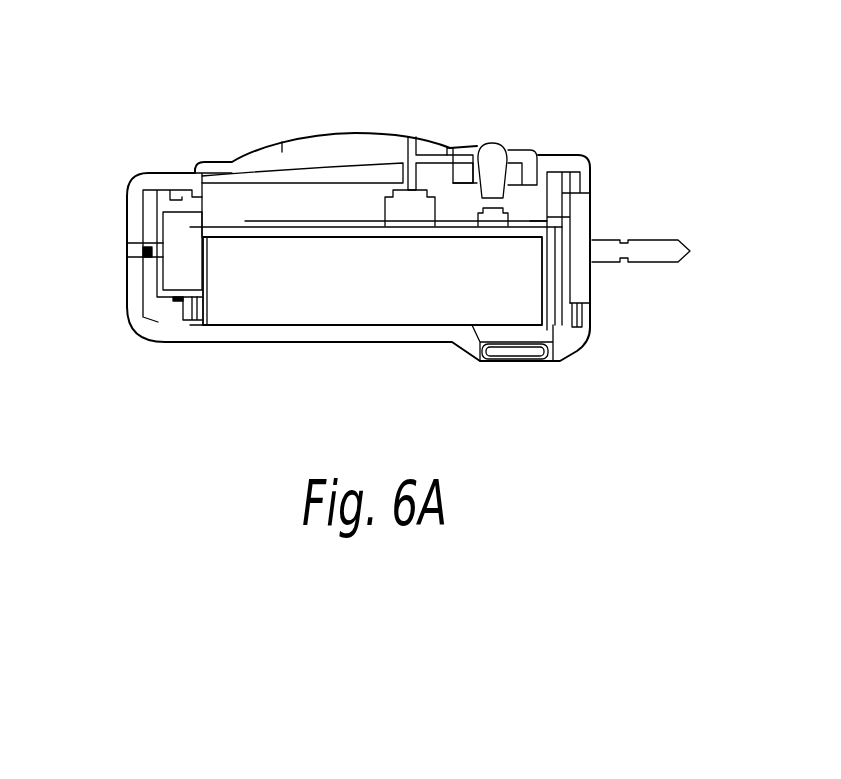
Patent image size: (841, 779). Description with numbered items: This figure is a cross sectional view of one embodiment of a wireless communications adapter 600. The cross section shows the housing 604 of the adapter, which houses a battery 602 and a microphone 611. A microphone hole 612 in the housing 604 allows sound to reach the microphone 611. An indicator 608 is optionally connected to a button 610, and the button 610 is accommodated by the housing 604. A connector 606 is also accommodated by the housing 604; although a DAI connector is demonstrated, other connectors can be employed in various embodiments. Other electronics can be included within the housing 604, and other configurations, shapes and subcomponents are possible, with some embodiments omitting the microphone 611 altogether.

The wireless communications adapter 600 is at (630, 73).
The battery 602 is at (300, 300).
The housing 604 is at (410, 343).
The connector 606 is at (593, 215).
The indicator 608 is at (355, 133).
The button 610 is at (263, 150).
The microphone 611 is at (178, 268).
The microphone hole 612 is at (132, 252).